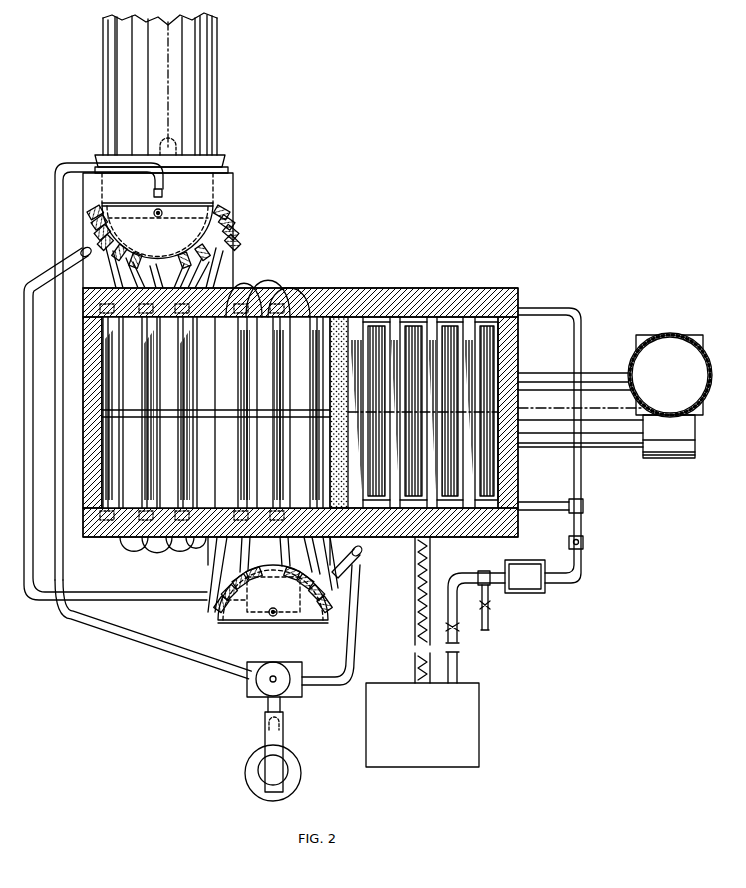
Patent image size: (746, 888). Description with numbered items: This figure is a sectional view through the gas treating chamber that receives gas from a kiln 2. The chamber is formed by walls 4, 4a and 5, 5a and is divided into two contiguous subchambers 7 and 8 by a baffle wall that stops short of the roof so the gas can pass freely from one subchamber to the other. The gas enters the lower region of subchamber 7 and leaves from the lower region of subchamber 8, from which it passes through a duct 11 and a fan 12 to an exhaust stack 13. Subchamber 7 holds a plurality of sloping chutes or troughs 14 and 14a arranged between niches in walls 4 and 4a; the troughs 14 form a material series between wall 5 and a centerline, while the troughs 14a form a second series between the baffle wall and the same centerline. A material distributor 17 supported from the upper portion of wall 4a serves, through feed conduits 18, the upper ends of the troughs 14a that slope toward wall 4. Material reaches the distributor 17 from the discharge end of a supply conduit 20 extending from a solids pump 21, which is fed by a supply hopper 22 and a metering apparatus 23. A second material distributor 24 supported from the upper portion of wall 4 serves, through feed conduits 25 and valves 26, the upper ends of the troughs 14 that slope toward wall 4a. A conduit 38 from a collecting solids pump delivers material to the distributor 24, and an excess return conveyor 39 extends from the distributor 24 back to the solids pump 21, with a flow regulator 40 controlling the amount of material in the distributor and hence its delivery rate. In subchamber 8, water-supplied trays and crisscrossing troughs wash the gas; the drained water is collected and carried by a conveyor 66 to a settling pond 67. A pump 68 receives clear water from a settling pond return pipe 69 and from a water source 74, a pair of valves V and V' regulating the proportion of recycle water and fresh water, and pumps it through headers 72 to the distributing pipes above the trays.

The kiln 2 is at (217, 57).
The wall 4 is at (299, 288).
The wall 4a is at (389, 537).
The wall 5 is at (90, 468).
The wall 5a is at (513, 468).
The subchamber 7 is at (215, 412).
The subchamber 8 is at (414, 412).
The duct 11 is at (598, 372).
The fan 12 is at (668, 458).
The exhaust stack 13 is at (668, 333).
The sloping troughs 14 is at (150, 540).
The sloping troughs 14a is at (242, 292).
The material distributor 17 is at (238, 622).
The feed conduits 18 is at (214, 565).
The supply conduit 20 is at (352, 653).
The solids pump 21 is at (288, 662).
The supply hopper 22 is at (300, 768).
The metering apparatus 23 is at (283, 733).
The material distributor 24 is at (126, 202).
The feed conduits 25 is at (240, 219).
The valves 26 is at (230, 253).
The conduit 38 is at (76, 250).
The excess return conveyor 39 is at (55, 206).
The flow regulator 40 is at (163, 192).
The conveyor 66 is at (415, 610).
The settling pond 67 is at (480, 726).
The pump 68 is at (548, 591).
The settling pond return pipe 69 is at (459, 668).
The headers 72 is at (583, 475).
The water source 74 is at (490, 626).
The valve V is at (463, 634).
The valve V' is at (499, 608).